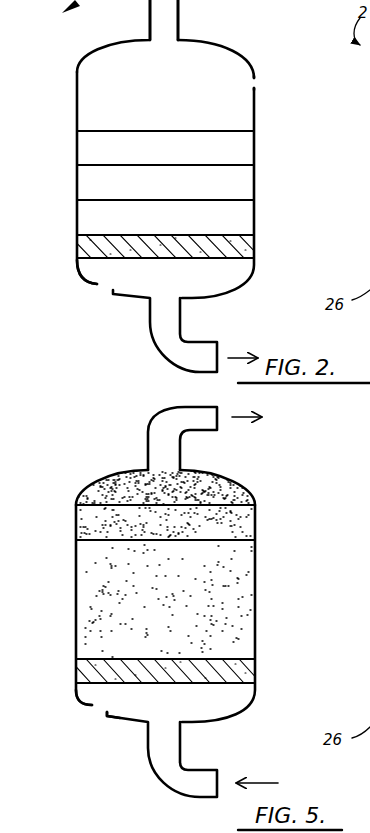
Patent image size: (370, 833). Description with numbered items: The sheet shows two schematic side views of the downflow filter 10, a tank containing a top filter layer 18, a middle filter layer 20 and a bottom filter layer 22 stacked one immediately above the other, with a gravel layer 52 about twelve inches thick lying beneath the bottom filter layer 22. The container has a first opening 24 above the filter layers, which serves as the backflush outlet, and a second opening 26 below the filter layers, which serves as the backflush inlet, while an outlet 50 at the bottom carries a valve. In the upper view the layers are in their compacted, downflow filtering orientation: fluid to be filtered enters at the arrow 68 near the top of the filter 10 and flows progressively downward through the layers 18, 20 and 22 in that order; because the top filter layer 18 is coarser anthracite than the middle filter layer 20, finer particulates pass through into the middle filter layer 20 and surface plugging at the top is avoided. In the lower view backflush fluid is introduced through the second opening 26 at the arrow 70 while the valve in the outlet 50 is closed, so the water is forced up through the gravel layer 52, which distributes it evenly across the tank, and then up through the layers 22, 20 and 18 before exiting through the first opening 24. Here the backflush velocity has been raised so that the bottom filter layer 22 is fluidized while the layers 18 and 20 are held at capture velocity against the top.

In FIG. 5, the downflow filter 10 is at (82, 458).
In FIG. 2, the top filter layer 18 is at (213, 150).
In FIG. 5, the top filter layer 18 is at (226, 492).
In FIG. 2, the middle filter layer 20 is at (210, 186).
In FIG. 5, the middle filter layer 20 is at (212, 523).
In FIG. 2, the bottom filter layer 22 is at (218, 222).
In FIG. 5, the bottom filter layer 22 is at (210, 604).
In FIG. 2, the first opening 24 is at (150, 14).
In FIG. 5, the first opening 24 is at (148, 455).
In FIG. 2, the second opening 26 is at (95, 285).
In FIG. 5, the second opening 26 is at (90, 706).
In FIG. 2, the outlet 50 is at (182, 313).
In FIG. 5, the outlet 50 is at (182, 740).
In FIG. 2, the gravel layer 52 is at (222, 250).
In FIG. 5, the gravel layer 52 is at (222, 668).
In FIG. 2, the arrow 68 is at (272, 80).
In FIG. 5, the arrow 70 is at (92, 724).